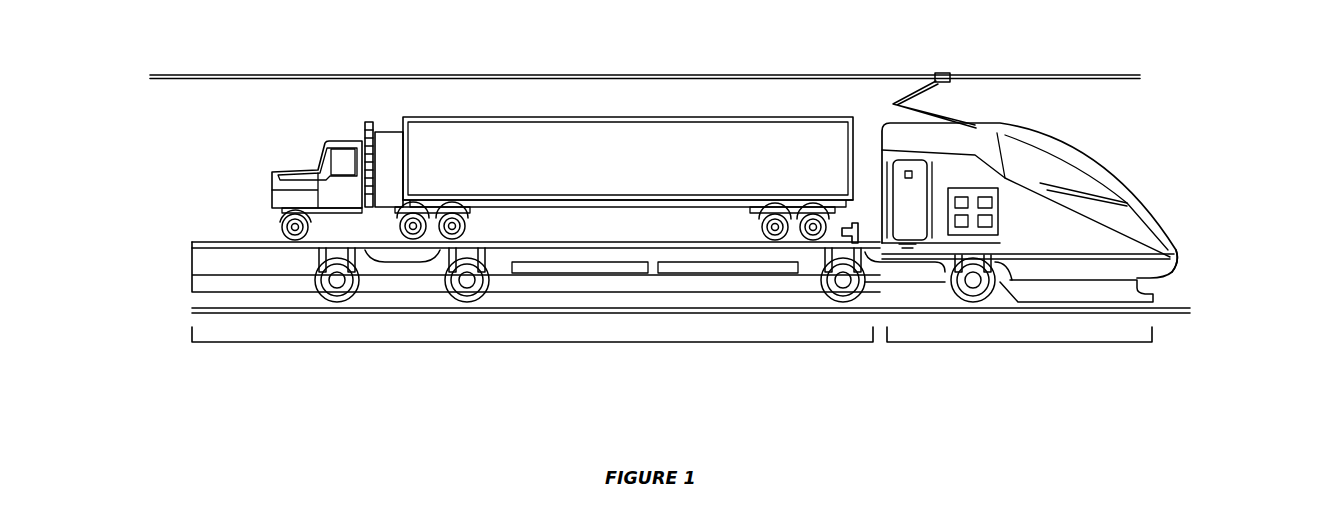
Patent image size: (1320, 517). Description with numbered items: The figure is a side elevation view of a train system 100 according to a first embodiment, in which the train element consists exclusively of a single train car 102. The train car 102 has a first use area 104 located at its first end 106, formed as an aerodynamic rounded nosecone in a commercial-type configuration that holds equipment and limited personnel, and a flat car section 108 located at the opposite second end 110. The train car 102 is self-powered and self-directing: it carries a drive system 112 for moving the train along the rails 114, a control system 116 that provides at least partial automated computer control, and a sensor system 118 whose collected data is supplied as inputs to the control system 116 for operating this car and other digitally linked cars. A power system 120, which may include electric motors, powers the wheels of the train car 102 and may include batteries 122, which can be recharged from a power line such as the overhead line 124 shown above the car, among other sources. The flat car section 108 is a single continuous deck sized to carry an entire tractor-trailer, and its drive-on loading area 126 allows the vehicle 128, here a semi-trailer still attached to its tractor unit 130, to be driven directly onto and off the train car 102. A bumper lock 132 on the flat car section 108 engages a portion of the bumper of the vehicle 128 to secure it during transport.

The train system 100 is at (892, 58).
The train car 102 is at (1081, 163).
The first use area 104 is at (1017, 343).
The first end 106 is at (1176, 248).
The flat car section 108 is at (516, 343).
The second end 110 is at (190, 258).
The drive system 112 is at (961, 197).
The rails 114 is at (225, 309).
The control system 116 is at (985, 197).
The sensor system 118 is at (961, 228).
The power system 120 is at (985, 228).
The batteries 122 is at (680, 275).
The overhead line 124 is at (316, 74).
The drive-on loading area 126 is at (193, 241).
The vehicle 128 is at (521, 116).
The tractor unit 130 is at (369, 121).
The bumper lock 132 is at (849, 236).